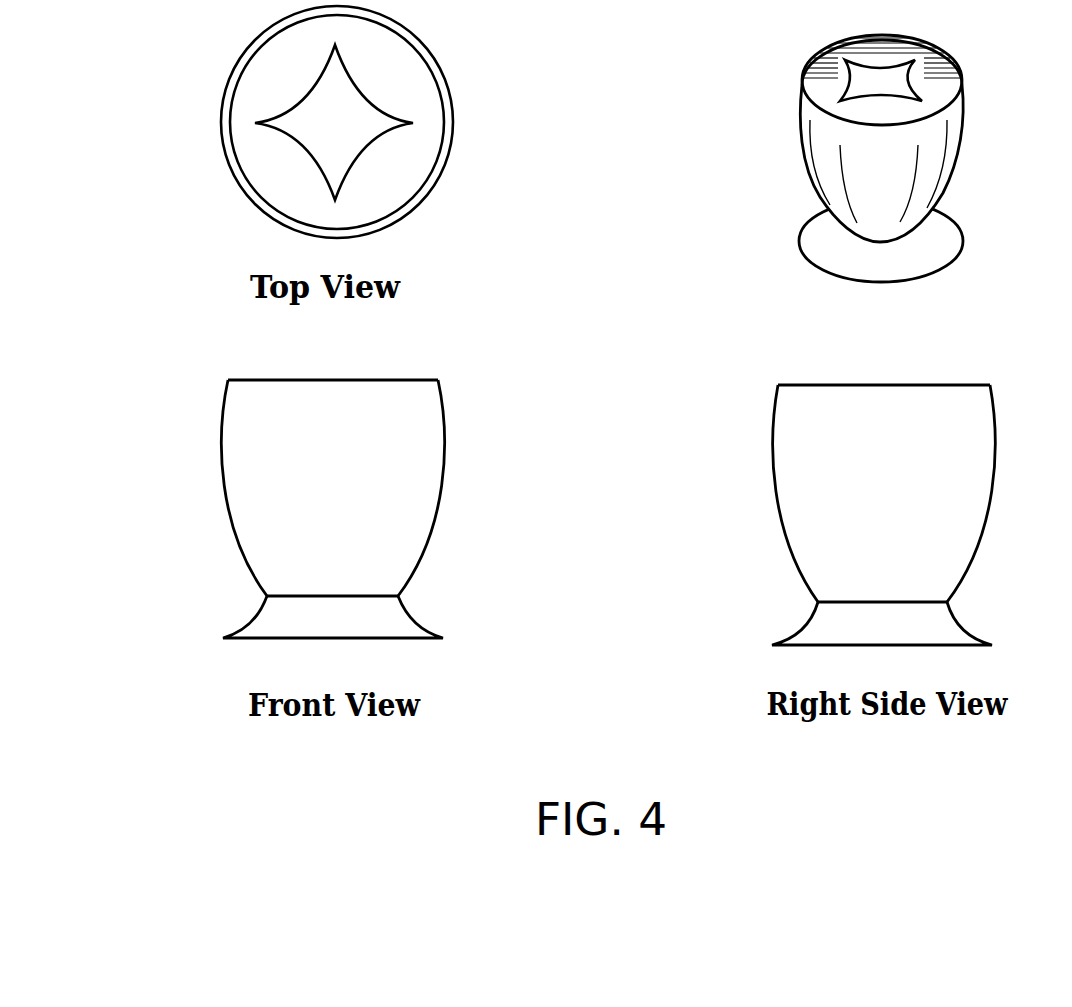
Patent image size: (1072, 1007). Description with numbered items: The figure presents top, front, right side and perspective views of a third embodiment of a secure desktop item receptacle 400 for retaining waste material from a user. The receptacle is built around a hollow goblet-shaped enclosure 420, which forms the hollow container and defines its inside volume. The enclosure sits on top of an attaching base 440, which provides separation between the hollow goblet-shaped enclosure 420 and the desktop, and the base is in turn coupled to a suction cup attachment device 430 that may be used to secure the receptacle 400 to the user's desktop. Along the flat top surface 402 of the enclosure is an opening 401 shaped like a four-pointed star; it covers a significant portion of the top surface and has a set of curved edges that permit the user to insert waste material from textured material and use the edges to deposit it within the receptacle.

The secure desktop item receptacle 400 is at (940, 86).
The opening 401 is at (377, 125).
The flat top surface 402 is at (393, 378).
The hollow goblet-shaped enclosure 420 is at (390, 490).
The attaching base 440 is at (405, 620).
The suction cup attachment device 430 is at (327, 643).